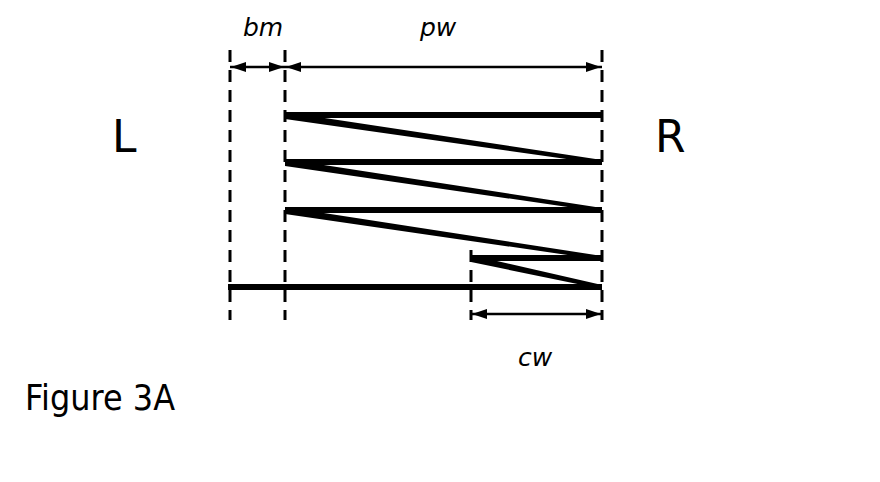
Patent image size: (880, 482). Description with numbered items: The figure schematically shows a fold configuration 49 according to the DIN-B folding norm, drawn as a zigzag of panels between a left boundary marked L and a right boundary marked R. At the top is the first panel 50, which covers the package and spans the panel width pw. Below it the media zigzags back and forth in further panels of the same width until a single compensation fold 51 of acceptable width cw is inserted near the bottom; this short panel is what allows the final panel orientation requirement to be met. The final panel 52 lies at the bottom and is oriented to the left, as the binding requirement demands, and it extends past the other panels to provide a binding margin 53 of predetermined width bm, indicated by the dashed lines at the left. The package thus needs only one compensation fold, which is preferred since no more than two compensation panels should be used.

The fold configuration 49 is at (684, 234).
The first panel 50 is at (548, 112).
The compensation fold 51 is at (430, 257).
The final panel 52 is at (417, 289).
The binding margin 53 is at (253, 70).